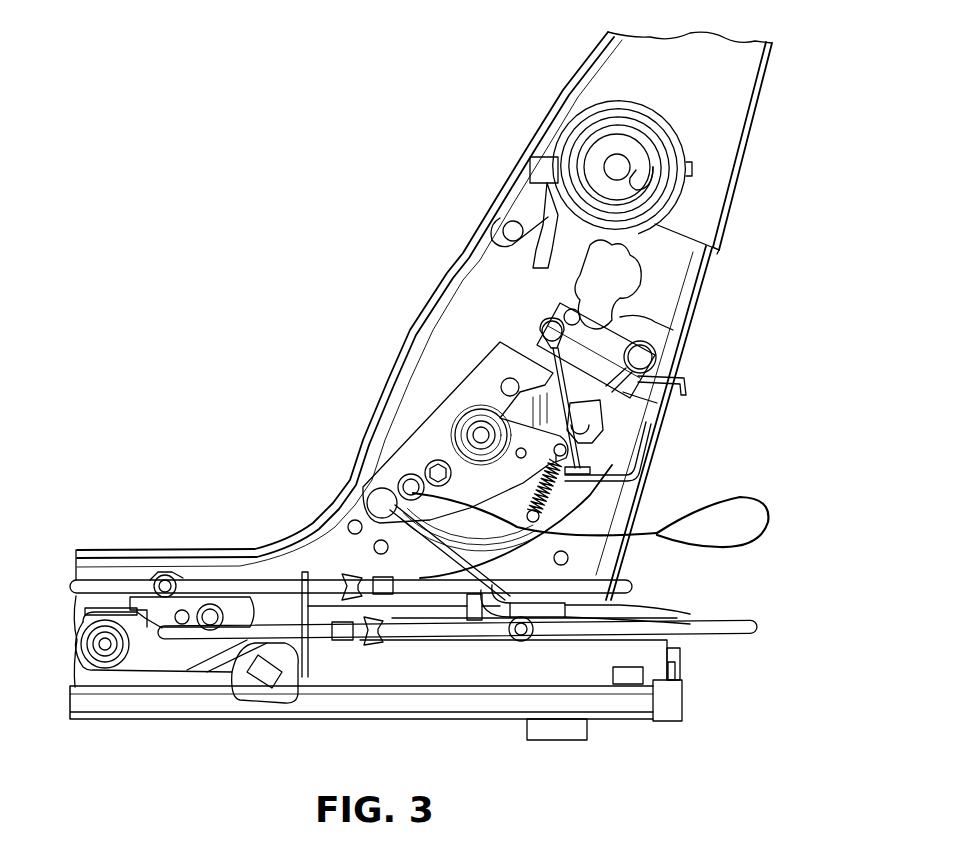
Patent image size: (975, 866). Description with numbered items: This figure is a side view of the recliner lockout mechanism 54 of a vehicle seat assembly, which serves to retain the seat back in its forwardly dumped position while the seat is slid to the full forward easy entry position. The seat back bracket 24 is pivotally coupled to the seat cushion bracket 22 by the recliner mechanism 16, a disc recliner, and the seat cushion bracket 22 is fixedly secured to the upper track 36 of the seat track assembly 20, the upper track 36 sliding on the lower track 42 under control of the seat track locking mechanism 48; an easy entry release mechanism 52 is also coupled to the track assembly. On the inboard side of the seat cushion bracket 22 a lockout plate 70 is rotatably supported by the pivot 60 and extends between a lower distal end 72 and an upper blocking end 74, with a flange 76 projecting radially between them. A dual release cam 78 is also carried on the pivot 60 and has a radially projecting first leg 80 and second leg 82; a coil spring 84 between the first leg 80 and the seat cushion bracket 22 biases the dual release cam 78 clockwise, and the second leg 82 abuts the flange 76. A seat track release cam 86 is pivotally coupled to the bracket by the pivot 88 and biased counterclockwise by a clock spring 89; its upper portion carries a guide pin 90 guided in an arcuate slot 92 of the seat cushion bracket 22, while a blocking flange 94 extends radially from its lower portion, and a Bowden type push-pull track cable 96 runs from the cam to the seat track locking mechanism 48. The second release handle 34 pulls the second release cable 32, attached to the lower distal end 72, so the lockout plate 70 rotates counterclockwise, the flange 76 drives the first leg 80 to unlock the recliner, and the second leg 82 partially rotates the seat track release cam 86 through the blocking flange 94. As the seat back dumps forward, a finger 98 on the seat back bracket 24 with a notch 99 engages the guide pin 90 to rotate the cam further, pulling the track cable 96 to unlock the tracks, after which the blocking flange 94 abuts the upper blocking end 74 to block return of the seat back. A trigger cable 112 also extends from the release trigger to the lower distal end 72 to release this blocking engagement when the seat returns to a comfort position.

The recliner mechanism 16 is at (610, 148).
The seat track assembly 20 is at (86, 724).
The seat cushion bracket 22 is at (447, 272).
The seat back bracket 24 is at (764, 87).
The second release cable 32 is at (623, 520).
The second release handle 34 is at (764, 517).
The upper track 36 is at (445, 668).
The lower track 42 is at (612, 705).
The seat track locking mechanism 48 is at (165, 574).
The easy entry release mechanism 52 is at (152, 690).
The recliner lockout mechanism 54 is at (291, 324).
The pivot 60 is at (481, 435).
The lockout plate 70 is at (455, 395).
The lower distal end 72 is at (375, 495).
The upper blocking end 74 is at (520, 350).
The flange 76 is at (493, 493).
The dual release cam 78 is at (481, 420).
The first leg 80 is at (535, 514).
The second leg 82 is at (548, 428).
The coil spring 84 is at (560, 498).
The seat track release cam 86 is at (628, 336).
The pivot 88 is at (642, 357).
The clock spring 89 is at (690, 390).
The guide pin 90 is at (565, 312).
The arcuate slot 92 is at (575, 318).
The blocking flange 94 is at (596, 436).
The track cable 96 is at (632, 470).
The finger 98 is at (549, 266).
The notch 99 is at (576, 283).
The trigger cable 112 is at (450, 553).